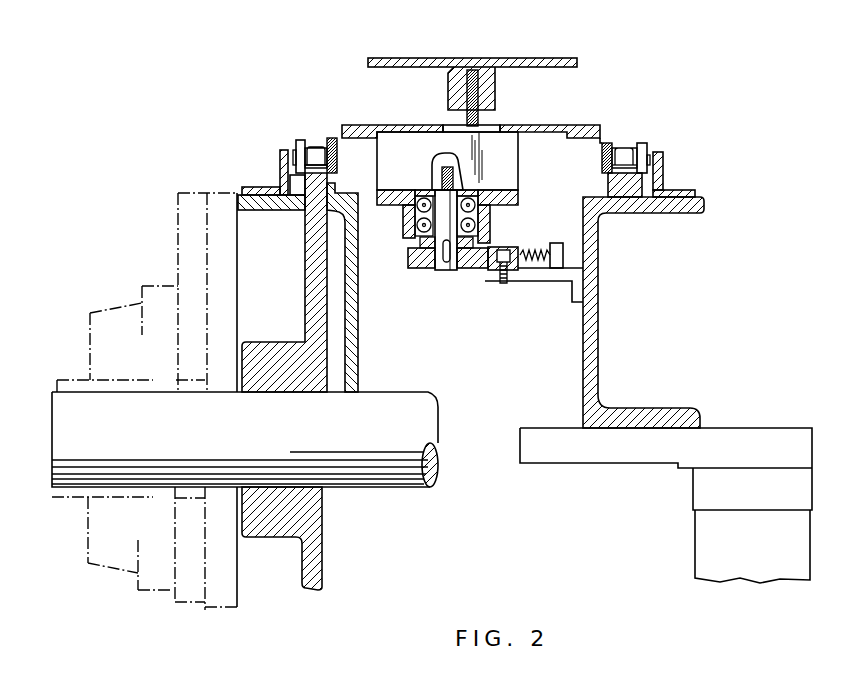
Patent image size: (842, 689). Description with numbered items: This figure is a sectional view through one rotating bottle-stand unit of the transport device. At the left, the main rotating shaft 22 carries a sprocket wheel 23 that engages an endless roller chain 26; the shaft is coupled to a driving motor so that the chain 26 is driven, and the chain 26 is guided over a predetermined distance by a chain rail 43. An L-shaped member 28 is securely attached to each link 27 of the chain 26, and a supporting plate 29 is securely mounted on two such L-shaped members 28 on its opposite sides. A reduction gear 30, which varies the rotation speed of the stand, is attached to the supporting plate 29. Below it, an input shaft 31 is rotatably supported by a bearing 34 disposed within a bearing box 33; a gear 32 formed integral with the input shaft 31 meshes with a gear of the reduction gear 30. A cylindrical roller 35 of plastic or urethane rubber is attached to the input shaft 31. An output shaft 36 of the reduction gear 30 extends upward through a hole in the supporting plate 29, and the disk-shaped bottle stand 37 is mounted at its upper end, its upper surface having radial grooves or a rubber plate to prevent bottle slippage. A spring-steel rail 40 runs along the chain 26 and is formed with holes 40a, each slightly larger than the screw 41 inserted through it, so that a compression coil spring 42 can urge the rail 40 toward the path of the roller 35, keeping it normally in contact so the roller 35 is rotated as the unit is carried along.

The main rotating shaft 22 is at (371, 489).
The sprocket wheel 23 is at (308, 258).
The endless chain 26 is at (316, 145).
The link 27 is at (302, 143).
The L-shaped member 28 is at (356, 130).
The supporting plate 29 is at (542, 137).
The reduction gear 30 is at (508, 172).
The input shaft 31 is at (443, 273).
The gear 32 is at (441, 172).
The bearing box 33 is at (400, 226).
The bearing 34 is at (490, 227).
The roller 35 is at (411, 272).
The output shaft 36 is at (479, 88).
The bottle stand 37 is at (490, 58).
The rail 40 is at (530, 263).
The hole 40a is at (507, 284).
The screw 41 is at (488, 272).
The compression coil spring 42 is at (564, 256).
The chain rail 43 is at (628, 190).